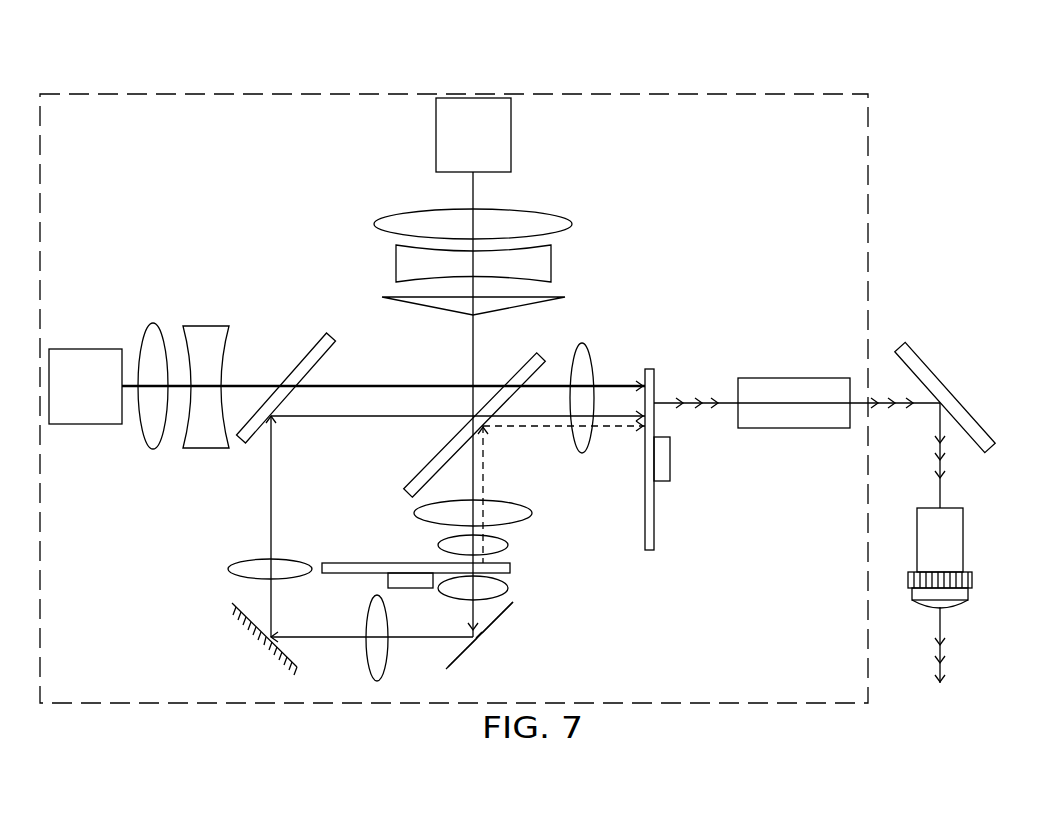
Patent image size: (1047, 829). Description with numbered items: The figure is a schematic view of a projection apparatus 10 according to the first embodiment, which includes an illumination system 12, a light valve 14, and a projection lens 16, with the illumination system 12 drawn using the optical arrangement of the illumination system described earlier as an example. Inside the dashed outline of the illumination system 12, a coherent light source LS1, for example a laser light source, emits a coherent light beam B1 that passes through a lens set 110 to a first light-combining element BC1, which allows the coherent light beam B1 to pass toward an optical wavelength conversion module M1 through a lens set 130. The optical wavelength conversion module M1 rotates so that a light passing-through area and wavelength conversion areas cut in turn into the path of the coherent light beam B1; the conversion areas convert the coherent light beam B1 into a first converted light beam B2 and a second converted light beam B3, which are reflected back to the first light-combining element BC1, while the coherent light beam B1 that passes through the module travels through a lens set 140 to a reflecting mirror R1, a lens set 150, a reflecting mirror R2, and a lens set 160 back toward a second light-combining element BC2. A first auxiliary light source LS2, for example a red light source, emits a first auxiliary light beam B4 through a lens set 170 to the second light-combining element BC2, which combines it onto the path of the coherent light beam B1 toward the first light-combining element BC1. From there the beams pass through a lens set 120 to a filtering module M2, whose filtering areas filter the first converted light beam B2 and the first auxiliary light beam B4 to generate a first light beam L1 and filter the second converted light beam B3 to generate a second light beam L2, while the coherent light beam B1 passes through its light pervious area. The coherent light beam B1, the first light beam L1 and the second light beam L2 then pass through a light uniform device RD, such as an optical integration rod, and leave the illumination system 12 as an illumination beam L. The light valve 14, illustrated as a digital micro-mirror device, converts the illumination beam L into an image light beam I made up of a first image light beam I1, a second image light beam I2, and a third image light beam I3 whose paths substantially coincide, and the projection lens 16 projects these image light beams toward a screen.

The projection apparatus 10 is at (1024, 712).
The illumination system 12 is at (868, 198).
The light valve 14 is at (933, 380).
The projection lens 16 is at (957, 547).
The lens set 110 is at (587, 218).
The lens set 120 is at (603, 345).
The lens set 130 is at (540, 502).
The lens set 140 is at (518, 589).
The lens set 150 is at (377, 686).
The lens set 160 is at (220, 572).
The lens set 170 is at (227, 310).
The coherent light source LS1 is at (495, 135).
The first auxiliary light source LS2 is at (88, 365).
The first light-combining element BC1 is at (540, 360).
The second light-combining element BC2 is at (329, 338).
The coherent light beam B1 is at (475, 192).
The first converted light beam B2 is at (490, 478).
The second converted light beam B3 is at (628, 430).
The first auxiliary light beam B4 is at (133, 390).
The optical wavelength conversion module M1 is at (515, 568).
The filtering module M2 is at (648, 553).
The light uniform device RD is at (795, 387).
The reflecting mirror R1 is at (470, 648).
The reflecting mirror R2 is at (278, 652).
The illumination beam L is at (893, 385).
The first light beam L1 is at (715, 400).
The second light beam L2 is at (690, 400).
The image light beam I is at (966, 440).
The first image light beam I1 is at (957, 490).
The second image light beam I2 is at (957, 470).
The third image light beam I3 is at (957, 449).